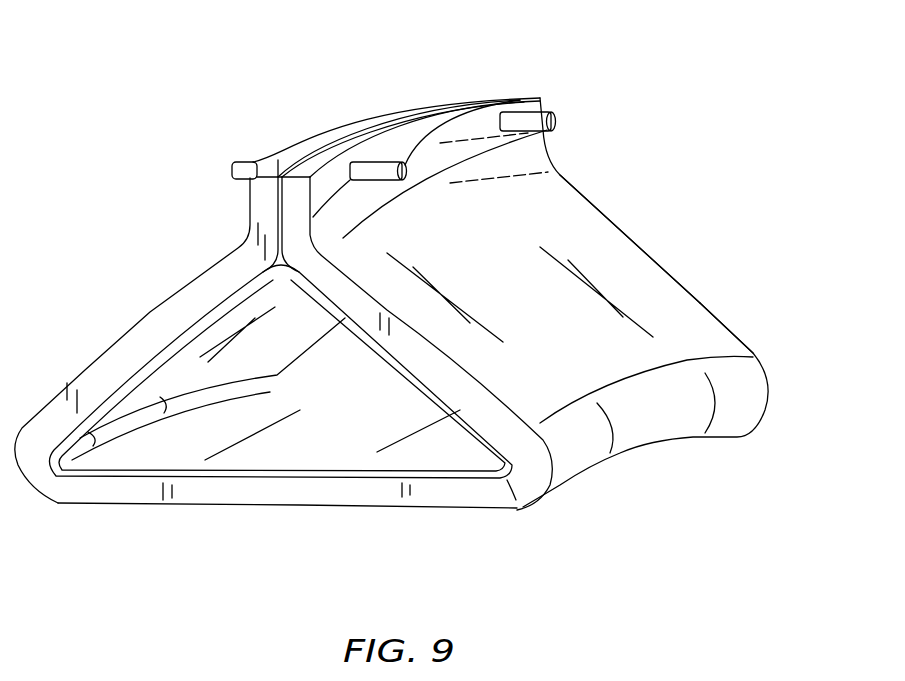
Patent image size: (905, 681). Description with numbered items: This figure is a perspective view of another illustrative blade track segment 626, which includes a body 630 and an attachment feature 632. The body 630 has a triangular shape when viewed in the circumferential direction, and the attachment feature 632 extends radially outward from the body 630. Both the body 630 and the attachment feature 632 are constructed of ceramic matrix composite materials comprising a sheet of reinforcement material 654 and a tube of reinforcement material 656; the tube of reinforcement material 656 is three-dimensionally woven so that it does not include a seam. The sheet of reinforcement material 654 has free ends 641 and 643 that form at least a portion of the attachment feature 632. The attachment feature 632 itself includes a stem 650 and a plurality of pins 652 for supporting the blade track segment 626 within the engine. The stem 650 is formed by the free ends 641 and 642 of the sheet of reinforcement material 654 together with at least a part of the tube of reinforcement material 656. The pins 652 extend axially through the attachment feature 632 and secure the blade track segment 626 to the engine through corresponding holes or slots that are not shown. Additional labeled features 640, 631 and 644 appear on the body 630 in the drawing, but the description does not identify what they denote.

The blade track segment 626 is at (718, 72).
The body 630 is at (752, 265).
The base top surface 631 is at (343, 473).
The attachment feature 632 is at (668, 144).
The base 640 is at (64, 327).
The free end 641 is at (321, 123).
The free end 642 is at (525, 348).
The free end 643 is at (406, 103).
The bottom edge 644 is at (175, 527).
The stem 650 is at (224, 207).
The pins 652 is at (542, 102).
The sheet of reinforcement material 654 is at (530, 453).
The tube of reinforcement material 656 is at (516, 500).